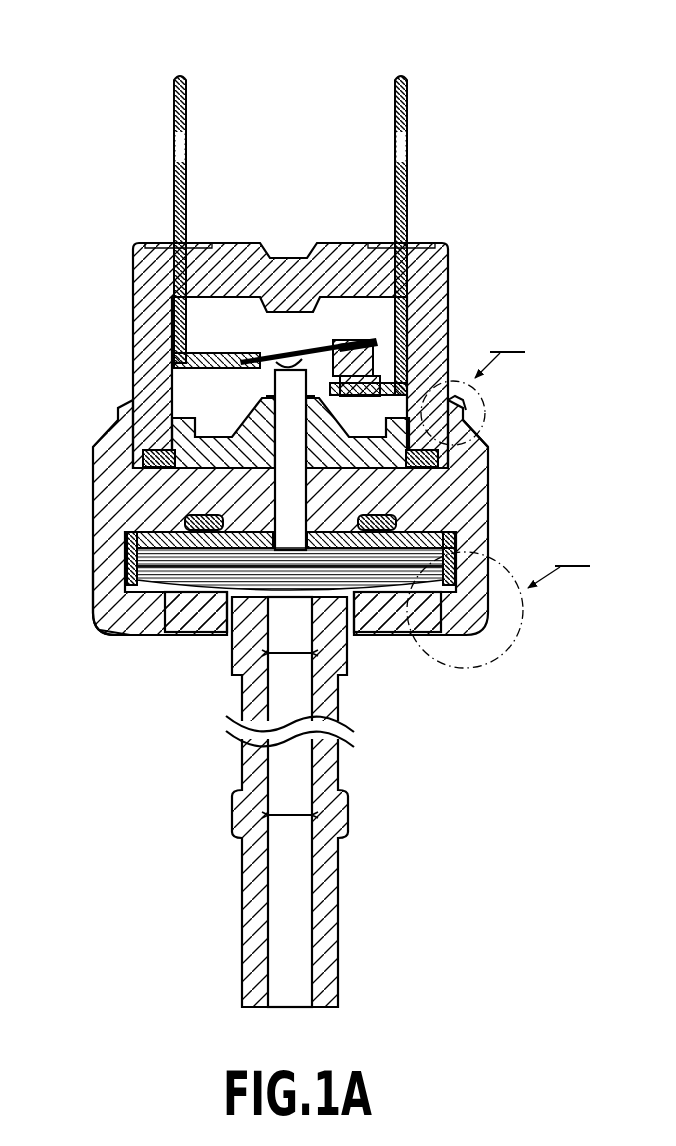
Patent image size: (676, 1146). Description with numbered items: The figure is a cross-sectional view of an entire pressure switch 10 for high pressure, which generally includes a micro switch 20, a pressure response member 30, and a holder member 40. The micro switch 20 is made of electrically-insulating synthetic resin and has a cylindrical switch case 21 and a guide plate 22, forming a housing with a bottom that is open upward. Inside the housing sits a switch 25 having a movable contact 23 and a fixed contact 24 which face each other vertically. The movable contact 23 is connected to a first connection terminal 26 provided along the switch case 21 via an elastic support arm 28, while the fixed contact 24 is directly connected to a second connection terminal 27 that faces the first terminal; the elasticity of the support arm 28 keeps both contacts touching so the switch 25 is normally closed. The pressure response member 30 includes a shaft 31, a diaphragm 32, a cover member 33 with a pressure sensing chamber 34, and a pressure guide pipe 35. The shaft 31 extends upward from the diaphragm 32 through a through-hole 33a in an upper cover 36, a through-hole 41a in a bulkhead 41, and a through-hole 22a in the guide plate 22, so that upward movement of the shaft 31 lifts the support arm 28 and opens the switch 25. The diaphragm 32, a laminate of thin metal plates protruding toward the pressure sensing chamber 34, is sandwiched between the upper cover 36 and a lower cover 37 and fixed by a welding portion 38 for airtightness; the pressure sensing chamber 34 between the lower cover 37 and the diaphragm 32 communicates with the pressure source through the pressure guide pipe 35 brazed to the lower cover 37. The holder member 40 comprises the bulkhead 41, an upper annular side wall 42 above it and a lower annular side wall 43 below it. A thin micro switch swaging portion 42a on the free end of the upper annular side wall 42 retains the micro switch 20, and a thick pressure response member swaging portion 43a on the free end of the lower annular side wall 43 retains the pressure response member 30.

The pressure switch 10 is at (305, 44).
The micro switch 20 is at (314, 313).
The switch case 21 is at (142, 307).
The guide plate 22 is at (237, 430).
The through-hole 22a is at (400, 458).
The movable contact 23 is at (353, 340).
The fixed contact 24 is at (365, 365).
The switch 25 is at (445, 322).
The first connection terminal 26 is at (188, 96).
The second connection terminal 27 is at (409, 96).
The support arm 28 is at (285, 350).
The pressure response member 30 is at (303, 794).
The shaft 31 is at (275, 380).
The diaphragm 32 is at (222, 582).
The cover member 33 is at (354, 642).
The through-hole 33a is at (395, 522).
The pressure sensing chamber 34 is at (365, 592).
The pressure guide pipe 35 is at (330, 912).
The upper cover 36 is at (168, 560).
The lower cover 37 is at (190, 596).
The welding portion 38 is at (458, 540).
The holder member 40 is at (292, 531).
The bulkhead 41 is at (155, 481).
The through-hole 41a is at (380, 493).
The upper annular side wall 42 is at (470, 440).
The micro switch swaging portion 42a is at (455, 404).
The lower annular side wall 43 is at (125, 592).
The pressure response member swaging portion 43a is at (135, 626).